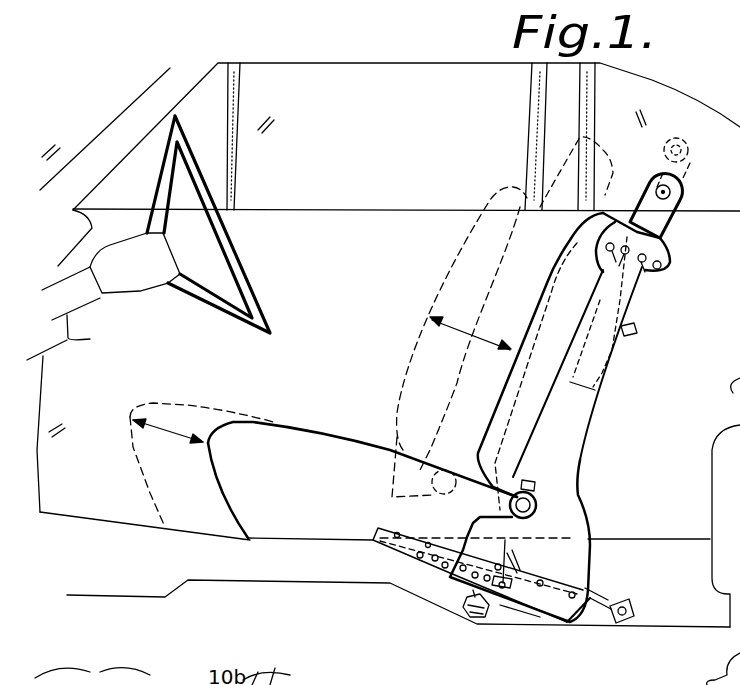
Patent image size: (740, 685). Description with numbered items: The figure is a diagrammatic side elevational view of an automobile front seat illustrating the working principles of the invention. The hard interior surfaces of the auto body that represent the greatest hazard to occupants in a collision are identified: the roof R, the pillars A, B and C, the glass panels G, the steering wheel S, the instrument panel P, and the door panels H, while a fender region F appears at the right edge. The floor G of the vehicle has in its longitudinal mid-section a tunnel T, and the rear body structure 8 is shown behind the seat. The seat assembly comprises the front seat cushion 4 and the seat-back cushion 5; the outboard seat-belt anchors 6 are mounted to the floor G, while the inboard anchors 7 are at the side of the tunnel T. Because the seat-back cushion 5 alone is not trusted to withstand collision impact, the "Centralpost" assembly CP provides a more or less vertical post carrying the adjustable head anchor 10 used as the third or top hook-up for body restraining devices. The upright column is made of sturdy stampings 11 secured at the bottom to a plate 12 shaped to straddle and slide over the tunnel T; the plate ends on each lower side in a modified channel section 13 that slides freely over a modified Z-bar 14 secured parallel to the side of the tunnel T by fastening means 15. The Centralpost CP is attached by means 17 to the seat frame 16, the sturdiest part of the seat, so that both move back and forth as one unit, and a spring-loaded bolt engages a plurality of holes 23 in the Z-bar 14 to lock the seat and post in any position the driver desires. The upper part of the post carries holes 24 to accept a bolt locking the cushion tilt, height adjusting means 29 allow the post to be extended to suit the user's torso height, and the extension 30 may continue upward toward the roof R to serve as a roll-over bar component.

The front seat cushion 4 is at (215, 408).
The seat-back cushion 5 is at (477, 440).
The outboard seat-belt anchors 6 is at (470, 610).
The inboard anchors 7 is at (628, 623).
The rear body structure 8 is at (712, 490).
The head anchor 10 is at (681, 193).
The sturdy stampings 11 is at (596, 427).
The plate 12 is at (590, 560).
The modified channel section 13 is at (527, 614).
The modified Z-bar 14 is at (385, 549).
The fastening means 15 is at (397, 535).
The seat frame 16 is at (540, 496).
The attaching means 17 is at (535, 479).
The holes 23 is at (418, 567).
The holes 24 is at (614, 251).
The height adjusting means 29 is at (640, 334).
The extension 30 is at (645, 192).
The pillar A is at (117, 117).
The pillar B is at (531, 138).
The pillar C is at (734, 151).
The fender F is at (735, 83).
The glass panels G is at (50, 147).
The door panels H is at (53, 428).
The instrument panel P is at (88, 330).
The roof R is at (455, 64).
The steering wheel S is at (250, 277).
The tunnel T is at (67, 512).
The Centralpost assembly CP is at (638, 328).